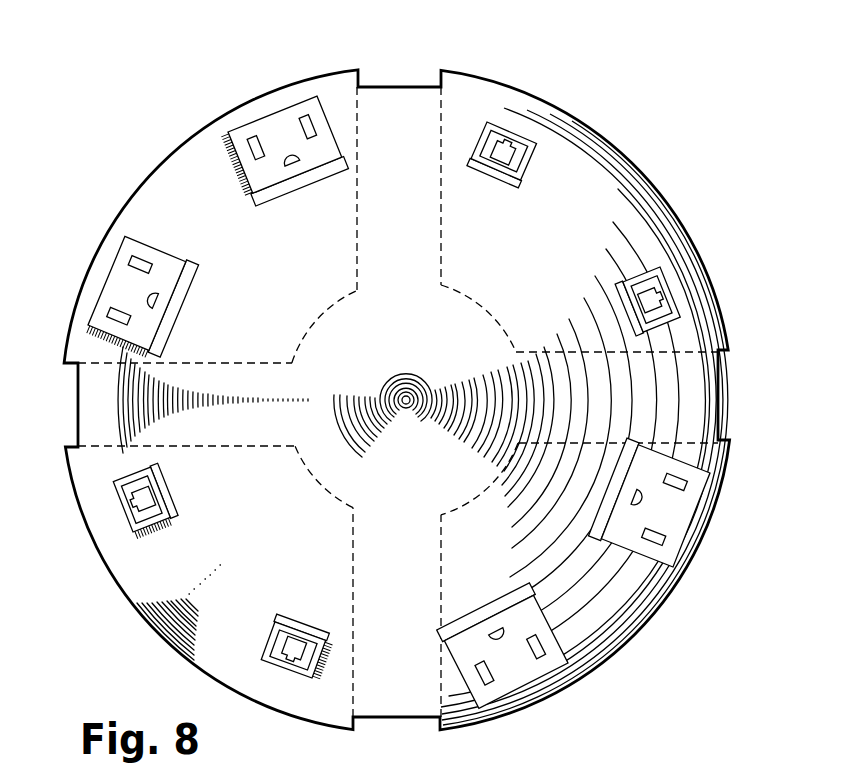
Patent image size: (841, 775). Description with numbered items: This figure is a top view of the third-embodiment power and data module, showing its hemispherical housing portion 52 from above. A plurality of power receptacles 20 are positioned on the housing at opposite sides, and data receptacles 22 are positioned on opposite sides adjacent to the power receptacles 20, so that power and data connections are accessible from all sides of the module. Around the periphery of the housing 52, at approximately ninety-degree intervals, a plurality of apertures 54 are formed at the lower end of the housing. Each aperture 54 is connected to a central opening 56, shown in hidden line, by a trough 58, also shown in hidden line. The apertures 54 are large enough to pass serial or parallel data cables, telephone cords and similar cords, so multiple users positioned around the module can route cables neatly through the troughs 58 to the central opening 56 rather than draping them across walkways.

The power receptacles 20 is at (248, 190).
The data receptacles 22 is at (622, 283).
The hemispherical housing portion 52 is at (422, 500).
The apertures 54 is at (410, 87).
The central opening 56 is at (313, 310).
The trough 58 is at (408, 228).